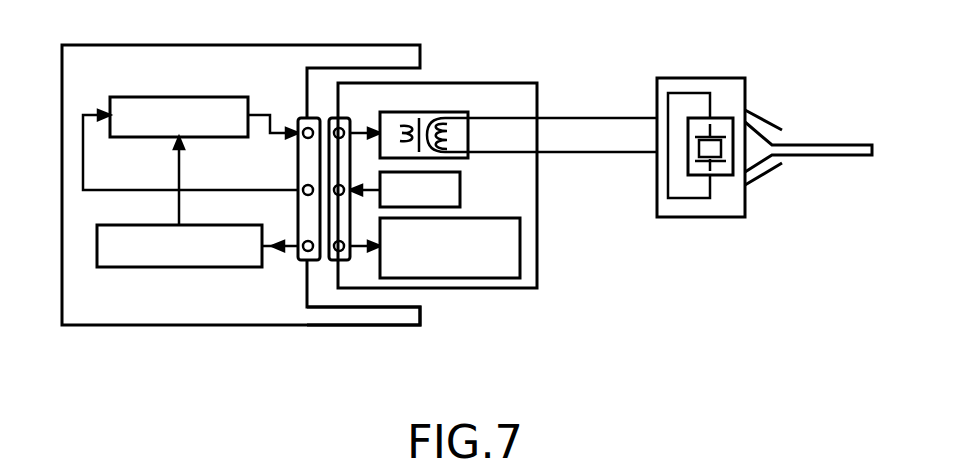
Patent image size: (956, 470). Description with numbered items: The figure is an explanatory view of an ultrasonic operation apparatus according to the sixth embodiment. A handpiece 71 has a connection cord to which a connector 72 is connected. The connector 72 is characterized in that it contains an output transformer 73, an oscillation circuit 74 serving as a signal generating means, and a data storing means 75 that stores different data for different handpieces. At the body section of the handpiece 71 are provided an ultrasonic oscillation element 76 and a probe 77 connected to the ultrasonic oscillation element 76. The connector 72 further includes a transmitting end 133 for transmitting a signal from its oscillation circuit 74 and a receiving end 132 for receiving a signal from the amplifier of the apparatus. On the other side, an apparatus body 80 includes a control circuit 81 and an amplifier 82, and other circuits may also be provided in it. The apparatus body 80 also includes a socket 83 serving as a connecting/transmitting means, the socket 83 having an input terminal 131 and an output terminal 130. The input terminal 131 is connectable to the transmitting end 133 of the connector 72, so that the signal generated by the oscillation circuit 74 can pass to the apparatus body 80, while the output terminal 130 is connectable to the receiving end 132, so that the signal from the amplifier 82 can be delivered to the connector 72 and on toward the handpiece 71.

The handpiece 71 is at (683, 78).
The connector 72 is at (537, 258).
The output transformer 73 is at (452, 112).
The oscillation circuit 74 is at (461, 190).
The data storing means 75 is at (505, 288).
The ultrasonic oscillation element 76 is at (722, 176).
The probe 77 is at (838, 145).
The apparatus body 80 is at (200, 326).
The control circuit 81 is at (165, 267).
The amplifier 82 is at (148, 97).
The socket 83 is at (390, 313).
The output terminal 130 is at (274, 158).
The input terminal 131 is at (301, 188).
The receiving end 132 is at (345, 192).
The transmitting end 133 is at (338, 205).